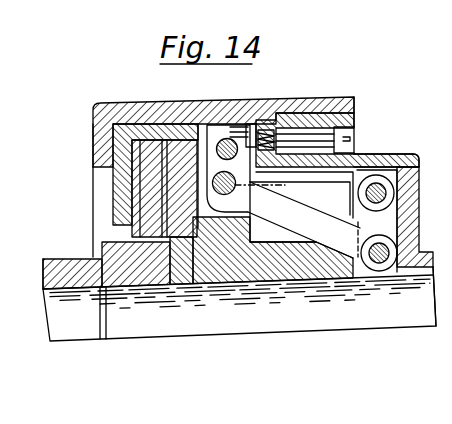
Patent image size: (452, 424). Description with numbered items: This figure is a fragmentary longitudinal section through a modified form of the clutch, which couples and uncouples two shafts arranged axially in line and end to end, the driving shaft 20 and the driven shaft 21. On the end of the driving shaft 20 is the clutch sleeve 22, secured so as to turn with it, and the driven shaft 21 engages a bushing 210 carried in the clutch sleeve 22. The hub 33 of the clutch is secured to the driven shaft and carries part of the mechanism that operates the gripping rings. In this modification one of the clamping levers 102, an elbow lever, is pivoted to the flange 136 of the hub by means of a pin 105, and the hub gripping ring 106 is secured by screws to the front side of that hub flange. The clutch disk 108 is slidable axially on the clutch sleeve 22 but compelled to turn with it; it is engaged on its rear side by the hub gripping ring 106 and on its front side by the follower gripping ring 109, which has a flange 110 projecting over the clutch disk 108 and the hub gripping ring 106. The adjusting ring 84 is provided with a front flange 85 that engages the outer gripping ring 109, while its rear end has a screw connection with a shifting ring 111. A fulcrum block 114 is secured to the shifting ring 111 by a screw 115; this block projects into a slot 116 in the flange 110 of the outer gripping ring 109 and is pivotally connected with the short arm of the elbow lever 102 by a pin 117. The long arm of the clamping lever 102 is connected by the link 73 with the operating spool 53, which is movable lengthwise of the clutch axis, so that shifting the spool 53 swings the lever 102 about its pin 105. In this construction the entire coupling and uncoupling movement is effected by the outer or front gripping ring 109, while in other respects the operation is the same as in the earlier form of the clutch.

The clutch disk 108 is at (141, 103).
The flange 110 is at (142, 147).
The slot 116 is at (240, 125).
The pin 117 is at (265, 131).
The fulcrum block 114 is at (296, 132).
The adjusting ring 84 is at (334, 98).
The front flange 85 is at (93, 141).
The shifting ring 111 is at (355, 118).
The screw 115 is at (355, 134).
The operating spool 53 is at (419, 168).
The follower gripping ring 109 is at (113, 213).
The bushing 210 is at (125, 273).
The pin 105 is at (247, 186).
The clamping lever 102 is at (286, 204).
The link 73 is at (420, 231).
The flange 136 is at (243, 228).
The hub 33 is at (321, 273).
The hub gripping ring 106 is at (185, 285).
The clutch sleeve 22 is at (63, 291).
The driving shaft 20 is at (89, 336).
The driven shaft 21 is at (428, 321).